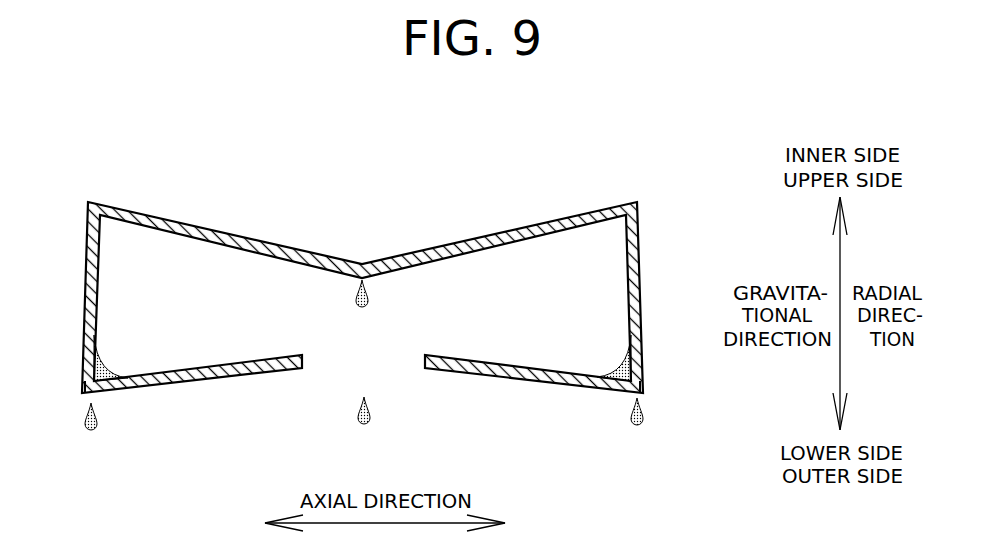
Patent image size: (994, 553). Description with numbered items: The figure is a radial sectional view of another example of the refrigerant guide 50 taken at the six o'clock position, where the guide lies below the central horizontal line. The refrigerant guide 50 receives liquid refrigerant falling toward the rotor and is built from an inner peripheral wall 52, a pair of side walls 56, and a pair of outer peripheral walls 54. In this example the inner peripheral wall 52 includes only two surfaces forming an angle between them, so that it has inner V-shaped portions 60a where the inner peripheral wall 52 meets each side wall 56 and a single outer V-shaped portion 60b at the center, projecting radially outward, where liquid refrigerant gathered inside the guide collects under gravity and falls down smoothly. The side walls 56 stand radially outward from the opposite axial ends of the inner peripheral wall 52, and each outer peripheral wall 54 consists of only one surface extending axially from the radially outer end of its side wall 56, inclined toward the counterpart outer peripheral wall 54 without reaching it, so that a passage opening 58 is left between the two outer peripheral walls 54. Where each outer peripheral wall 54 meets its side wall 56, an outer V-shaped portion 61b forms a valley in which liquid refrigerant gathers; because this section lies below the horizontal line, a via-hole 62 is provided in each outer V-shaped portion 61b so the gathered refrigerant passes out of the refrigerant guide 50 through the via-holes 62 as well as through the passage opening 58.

The refrigerant guide 50 is at (414, 197).
The inner peripheral wall 52 is at (255, 237).
The outer peripheral wall 54 is at (233, 377).
The side wall 56 is at (83, 320).
The passage opening 58 is at (388, 355).
The inner V-shaped portion 60a is at (88, 201).
The outer V-shaped portion 60b is at (362, 262).
The outer V-shaped portion 61b is at (81, 396).
The via-hole 62 is at (82, 380).